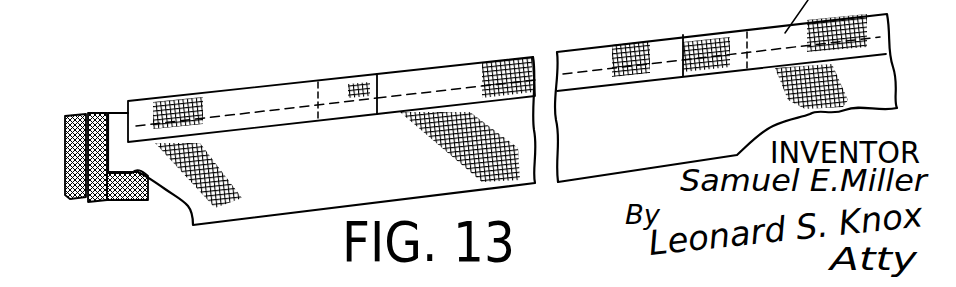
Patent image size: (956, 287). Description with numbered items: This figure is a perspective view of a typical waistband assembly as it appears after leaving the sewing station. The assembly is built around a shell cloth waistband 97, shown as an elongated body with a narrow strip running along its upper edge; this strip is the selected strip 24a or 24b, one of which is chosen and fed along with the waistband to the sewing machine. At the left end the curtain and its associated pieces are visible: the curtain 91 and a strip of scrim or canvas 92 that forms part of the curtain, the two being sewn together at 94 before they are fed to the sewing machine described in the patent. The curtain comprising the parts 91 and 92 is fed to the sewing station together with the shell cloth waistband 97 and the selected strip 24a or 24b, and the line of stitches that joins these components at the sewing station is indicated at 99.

The shell cloth waistband 97 is at (287, 184).
The strip 24a is at (232, 103).
The strip 24b is at (478, 42).
The line of stitches 99 is at (145, 113).
The strip of scrim or canvas 92 is at (83, 198).
The curtain 91 is at (115, 201).
The sewn joint 94 is at (143, 201).